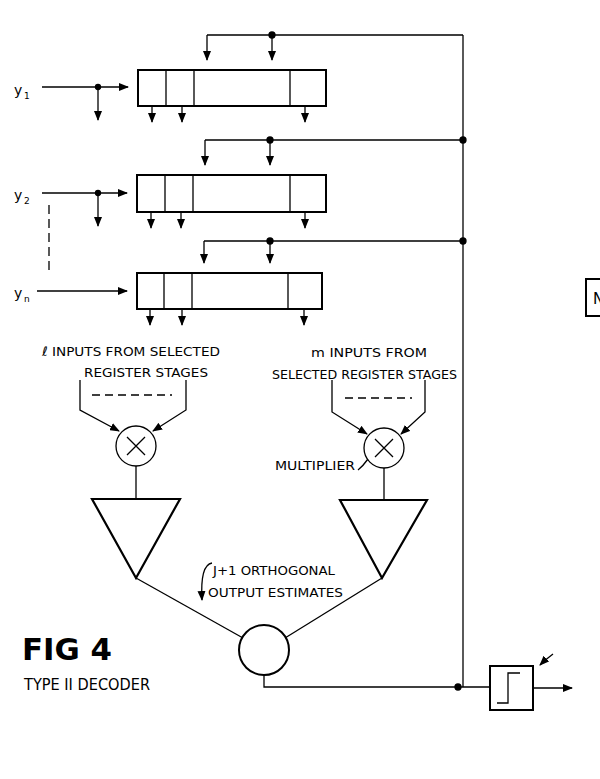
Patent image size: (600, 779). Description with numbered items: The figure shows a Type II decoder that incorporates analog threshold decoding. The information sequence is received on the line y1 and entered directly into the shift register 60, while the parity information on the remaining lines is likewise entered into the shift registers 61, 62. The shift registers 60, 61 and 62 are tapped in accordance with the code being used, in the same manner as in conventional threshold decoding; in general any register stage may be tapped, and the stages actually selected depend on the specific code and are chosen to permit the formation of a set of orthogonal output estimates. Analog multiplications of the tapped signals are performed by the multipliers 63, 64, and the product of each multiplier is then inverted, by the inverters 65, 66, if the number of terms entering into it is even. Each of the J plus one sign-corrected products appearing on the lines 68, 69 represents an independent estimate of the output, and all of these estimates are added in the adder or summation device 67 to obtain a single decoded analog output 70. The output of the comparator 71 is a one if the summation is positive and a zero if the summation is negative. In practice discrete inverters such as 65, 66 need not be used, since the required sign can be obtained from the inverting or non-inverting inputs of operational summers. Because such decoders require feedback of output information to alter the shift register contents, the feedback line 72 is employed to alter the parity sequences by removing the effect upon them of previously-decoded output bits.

The shift register 60 is at (302, 108).
The shift register 61 is at (302, 214).
The shift register 62 is at (300, 311).
The multiplier 63 is at (152, 456).
The multiplier 64 is at (402, 459).
The inverter 65 is at (157, 540).
The inverter 66 is at (407, 540).
The summation device 67 is at (290, 656).
The line 68 is at (189, 608).
The line 69 is at (336, 610).
The decoded analog output 70 is at (372, 686).
The comparator 71 is at (488, 697).
The feedback line 72 is at (463, 391).